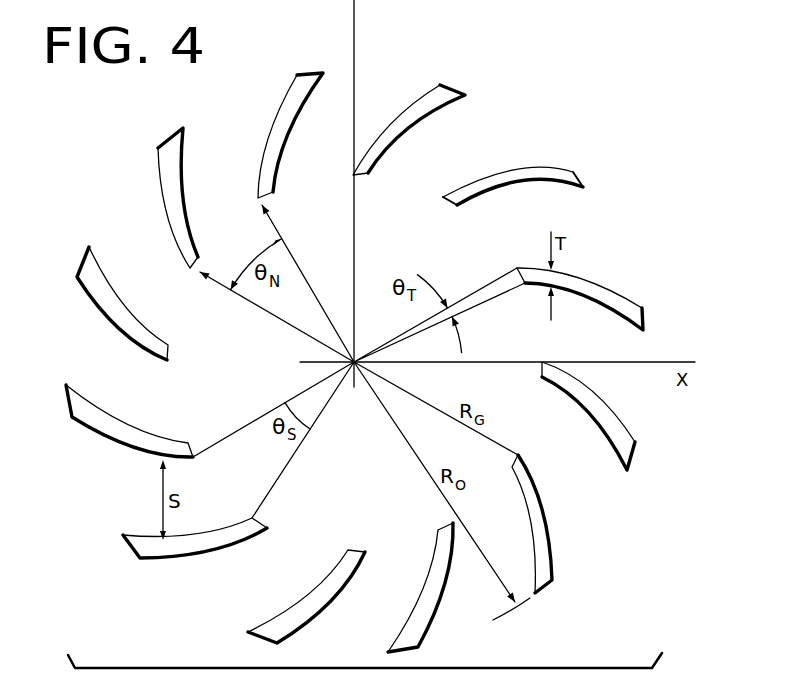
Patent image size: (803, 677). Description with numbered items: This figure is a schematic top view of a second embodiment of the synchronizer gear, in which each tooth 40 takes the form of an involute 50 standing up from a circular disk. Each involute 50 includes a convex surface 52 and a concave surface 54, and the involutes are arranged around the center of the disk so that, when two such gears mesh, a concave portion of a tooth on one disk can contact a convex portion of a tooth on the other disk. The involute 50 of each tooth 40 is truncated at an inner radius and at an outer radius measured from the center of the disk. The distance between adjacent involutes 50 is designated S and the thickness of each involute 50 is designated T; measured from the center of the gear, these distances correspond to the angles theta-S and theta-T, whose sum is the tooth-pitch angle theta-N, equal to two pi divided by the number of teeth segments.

The tooth 40 is at (521, 168).
The involute 50 is at (452, 92).
The convex surface 52 is at (519, 166).
The concave surface 54 is at (555, 185).